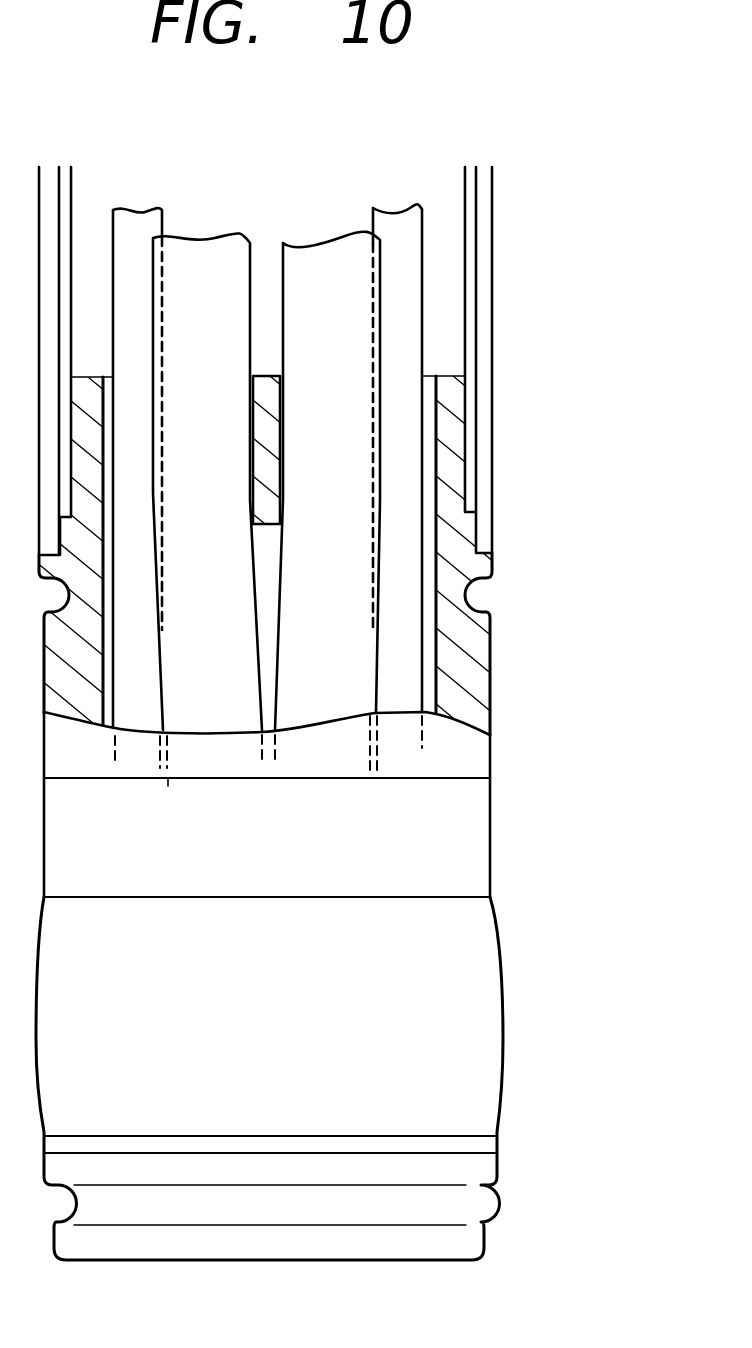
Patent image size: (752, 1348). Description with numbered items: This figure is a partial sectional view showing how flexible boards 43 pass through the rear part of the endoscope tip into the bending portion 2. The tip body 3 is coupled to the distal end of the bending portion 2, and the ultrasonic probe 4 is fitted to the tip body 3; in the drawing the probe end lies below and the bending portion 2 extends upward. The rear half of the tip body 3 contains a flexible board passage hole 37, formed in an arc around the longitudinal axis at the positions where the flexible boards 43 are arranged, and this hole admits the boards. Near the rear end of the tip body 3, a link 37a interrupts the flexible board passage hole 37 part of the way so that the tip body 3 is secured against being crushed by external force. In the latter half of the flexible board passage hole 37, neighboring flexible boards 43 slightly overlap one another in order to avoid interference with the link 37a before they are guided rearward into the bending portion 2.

The bending portion 2 is at (518, 179).
The flexible boards 43 is at (147, 296).
The link 37a is at (273, 416).
The flexible board passage hole 37 is at (438, 553).
The tip body 3 is at (498, 856).
The ultrasonic probe 4 is at (518, 1007).